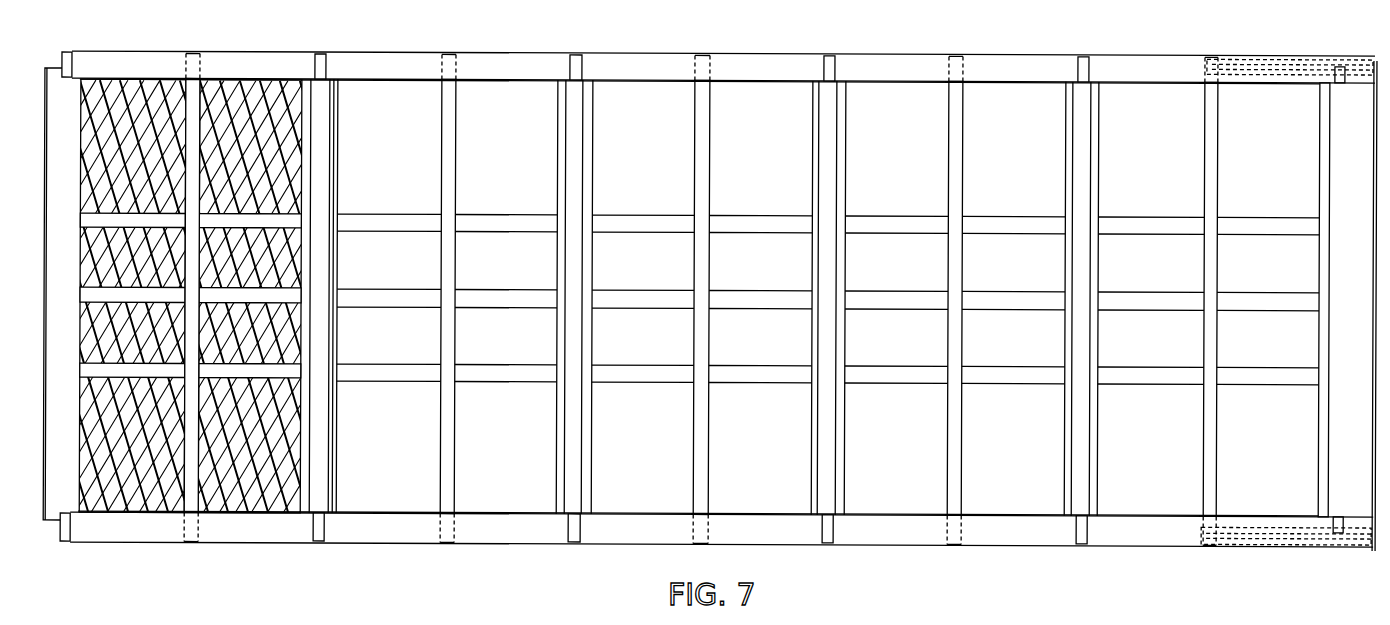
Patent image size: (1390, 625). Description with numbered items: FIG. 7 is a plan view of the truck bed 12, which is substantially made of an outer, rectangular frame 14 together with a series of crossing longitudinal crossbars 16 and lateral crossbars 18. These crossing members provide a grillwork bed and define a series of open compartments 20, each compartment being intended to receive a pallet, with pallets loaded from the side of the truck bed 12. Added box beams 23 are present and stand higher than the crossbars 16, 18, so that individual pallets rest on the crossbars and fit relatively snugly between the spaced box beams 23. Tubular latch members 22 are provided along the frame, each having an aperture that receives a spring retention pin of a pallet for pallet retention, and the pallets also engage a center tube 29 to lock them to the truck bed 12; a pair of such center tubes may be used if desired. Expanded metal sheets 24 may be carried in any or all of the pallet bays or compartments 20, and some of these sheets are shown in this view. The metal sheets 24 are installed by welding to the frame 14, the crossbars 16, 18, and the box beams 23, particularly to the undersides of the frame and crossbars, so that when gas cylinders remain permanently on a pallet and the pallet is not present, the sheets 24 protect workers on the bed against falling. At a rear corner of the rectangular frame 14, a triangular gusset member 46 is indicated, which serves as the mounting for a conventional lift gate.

The truck bed 12 is at (664, 50).
The rectangular frame 14 is at (58, 108).
The longitudinal crossbars 16 is at (645, 222).
The lateral crossbars 18 is at (705, 183).
The open compartments 20 is at (412, 95).
The tubular latch members 22 is at (823, 61).
The box beams 23 is at (328, 148).
The expanded metal sheets 24 is at (163, 88).
The center tube 29 is at (413, 295).
The triangular gusset member 46 is at (1238, 544).